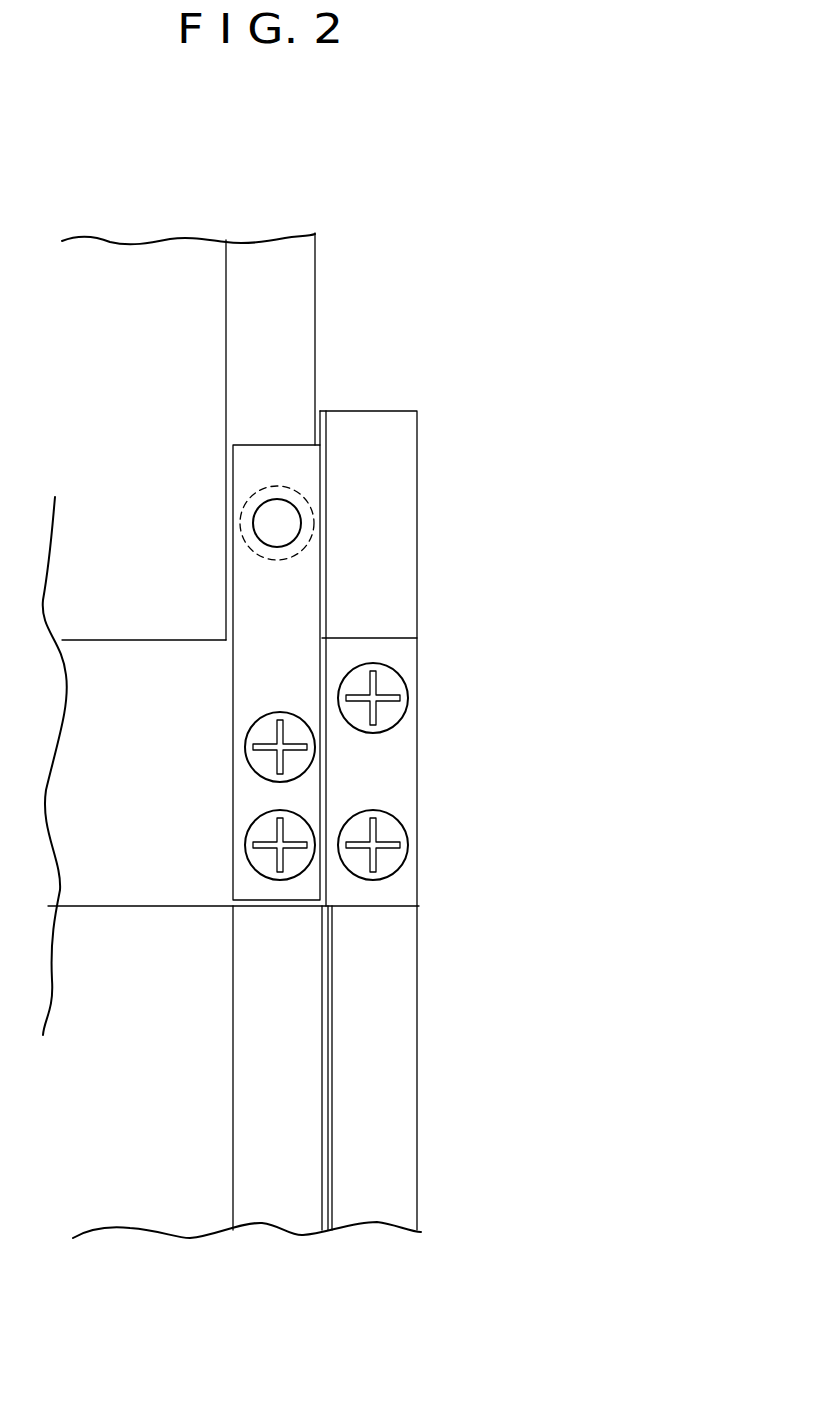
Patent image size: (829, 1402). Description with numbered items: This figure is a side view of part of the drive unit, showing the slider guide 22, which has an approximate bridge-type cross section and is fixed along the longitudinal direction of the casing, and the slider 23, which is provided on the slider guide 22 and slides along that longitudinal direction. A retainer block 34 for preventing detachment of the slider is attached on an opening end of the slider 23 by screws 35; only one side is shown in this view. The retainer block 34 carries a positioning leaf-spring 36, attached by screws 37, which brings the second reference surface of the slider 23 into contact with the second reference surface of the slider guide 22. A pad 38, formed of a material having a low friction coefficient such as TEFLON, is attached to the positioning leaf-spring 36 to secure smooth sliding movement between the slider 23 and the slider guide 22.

The slider guide 22 is at (277, 348).
The slider 23 is at (387, 518).
The retainer block 34 is at (122, 889).
The screws 35 is at (390, 717).
The positioning leaf-spring 36 is at (257, 590).
The screws 37 is at (260, 728).
The pad 38 is at (268, 515).